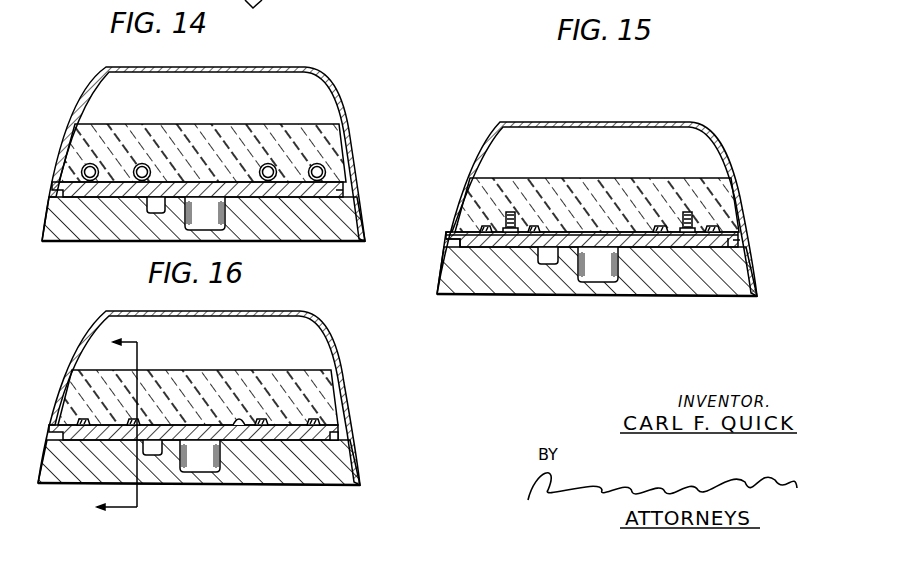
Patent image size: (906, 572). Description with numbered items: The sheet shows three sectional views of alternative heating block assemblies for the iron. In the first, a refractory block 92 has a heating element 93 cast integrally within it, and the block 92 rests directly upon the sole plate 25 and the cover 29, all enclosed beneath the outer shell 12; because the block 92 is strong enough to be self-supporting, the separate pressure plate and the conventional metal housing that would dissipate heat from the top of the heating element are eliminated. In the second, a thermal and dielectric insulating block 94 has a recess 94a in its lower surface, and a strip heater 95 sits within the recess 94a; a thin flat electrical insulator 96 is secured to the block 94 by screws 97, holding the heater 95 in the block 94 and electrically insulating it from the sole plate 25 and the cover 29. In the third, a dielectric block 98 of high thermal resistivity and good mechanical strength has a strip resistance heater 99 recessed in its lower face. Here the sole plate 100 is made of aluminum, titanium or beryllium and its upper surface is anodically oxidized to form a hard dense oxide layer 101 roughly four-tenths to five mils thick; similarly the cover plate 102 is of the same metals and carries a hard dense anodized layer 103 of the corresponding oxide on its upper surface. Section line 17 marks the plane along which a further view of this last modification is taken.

In FIG. 14, the dome cover 12 is at (322, 82).
In FIG. 14, the refractory block 92 is at (330, 147).
In FIG. 14, the heating element 93 is at (330, 172).
In FIG. 14, the cover 29 is at (346, 197).
In FIG. 15, the cover 29 is at (740, 243).
In FIG. 14, the sole plate 25 is at (360, 236).
In FIG. 15, the sole plate 25 is at (748, 285).
In FIG. 15, the thermal and dielectric insulating block 94 is at (708, 180).
In FIG. 15, the recess 94a is at (486, 238).
In FIG. 15, the strip heater 95 is at (710, 229).
In FIG. 15, the thin flat electrical insulator 96 is at (730, 236).
In FIG. 15, the screws 97 is at (694, 214).
In FIG. 16, the dielectric block 98 is at (302, 370).
In FIG. 16, the strip resistance heater 99 is at (315, 421).
In FIG. 16, the sole plate 100 is at (353, 471).
In FIG. 16, the layer 101 is at (345, 442).
In FIG. 16, the cover plate 102 is at (292, 442).
In FIG. 16, the anodized layer 103 is at (241, 424).
In FIG. 16, the section line 17- 17 is at (102, 427).